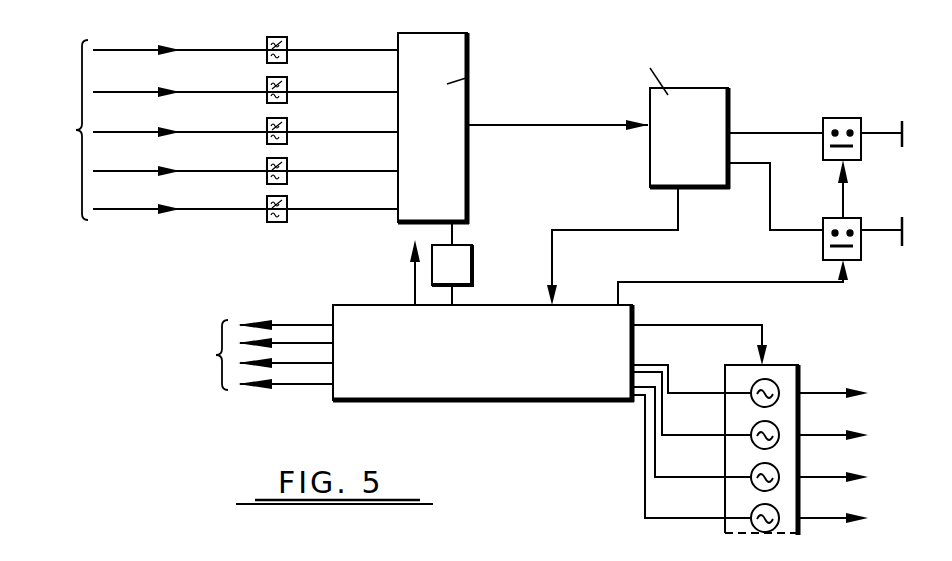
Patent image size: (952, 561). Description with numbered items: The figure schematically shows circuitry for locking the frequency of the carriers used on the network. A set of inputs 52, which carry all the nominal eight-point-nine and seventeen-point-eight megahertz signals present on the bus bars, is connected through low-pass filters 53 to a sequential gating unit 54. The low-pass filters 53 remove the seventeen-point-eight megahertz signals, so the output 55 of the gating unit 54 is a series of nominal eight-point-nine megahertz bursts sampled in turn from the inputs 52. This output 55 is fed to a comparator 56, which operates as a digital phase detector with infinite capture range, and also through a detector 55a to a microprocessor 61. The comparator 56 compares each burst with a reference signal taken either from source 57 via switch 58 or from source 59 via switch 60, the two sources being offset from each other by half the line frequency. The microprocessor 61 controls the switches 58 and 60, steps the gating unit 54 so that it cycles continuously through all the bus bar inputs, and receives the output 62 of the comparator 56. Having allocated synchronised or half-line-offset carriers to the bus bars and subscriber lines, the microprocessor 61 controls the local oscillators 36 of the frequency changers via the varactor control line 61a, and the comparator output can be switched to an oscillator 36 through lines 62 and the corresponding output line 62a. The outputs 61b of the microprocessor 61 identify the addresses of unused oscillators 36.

The inputs 52 is at (219, 130).
The low-pass filters 53 is at (288, 38).
The sequential gating unit 54 is at (450, 44).
The output 55 is at (525, 127).
The detector 55a is at (460, 259).
The comparator 56 is at (682, 147).
The source 57 is at (900, 121).
The switch 58 is at (830, 118).
The source 59 is at (903, 219).
The switch 60 is at (828, 221).
The microprocessor 61 is at (352, 330).
The varactor control line 61a is at (673, 517).
The outputs 61b is at (245, 355).
The output 62 is at (676, 205).
The output line 62a is at (707, 324).
The local oscillators 36 is at (756, 424).